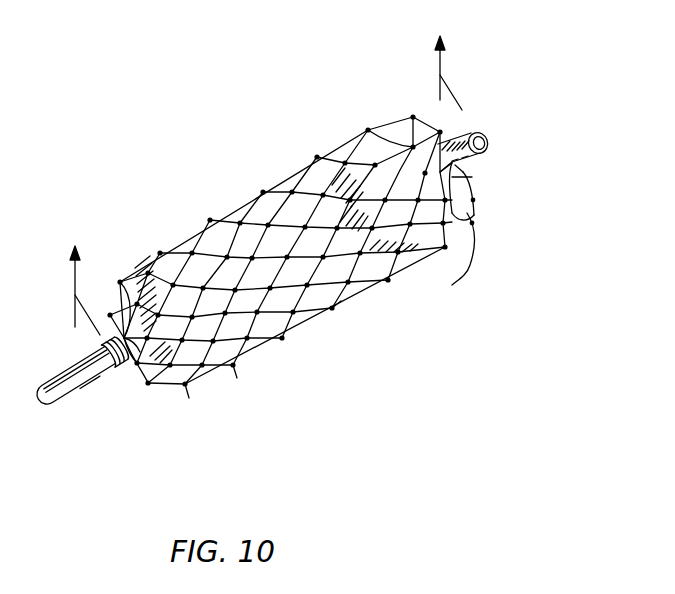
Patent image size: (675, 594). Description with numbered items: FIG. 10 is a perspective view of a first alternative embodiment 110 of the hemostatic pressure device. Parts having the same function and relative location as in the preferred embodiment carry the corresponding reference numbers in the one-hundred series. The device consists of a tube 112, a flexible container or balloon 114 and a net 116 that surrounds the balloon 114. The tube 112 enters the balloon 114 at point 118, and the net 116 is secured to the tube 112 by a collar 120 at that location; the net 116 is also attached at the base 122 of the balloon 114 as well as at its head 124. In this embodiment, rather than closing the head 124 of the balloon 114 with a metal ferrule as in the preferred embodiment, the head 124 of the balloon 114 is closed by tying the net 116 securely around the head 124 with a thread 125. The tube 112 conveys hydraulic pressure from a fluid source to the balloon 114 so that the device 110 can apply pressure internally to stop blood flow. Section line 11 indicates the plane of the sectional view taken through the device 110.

The first alternative embodiment 110 is at (522, 174).
The tube 112 is at (84, 396).
The balloon 114 is at (343, 303).
The net 116 is at (190, 387).
The point 118 is at (127, 372).
The collar 120 is at (110, 335).
The base 122 is at (172, 370).
The head 124 is at (481, 164).
The thread 125 is at (478, 228).
The section line 11- 11 is at (265, 195).